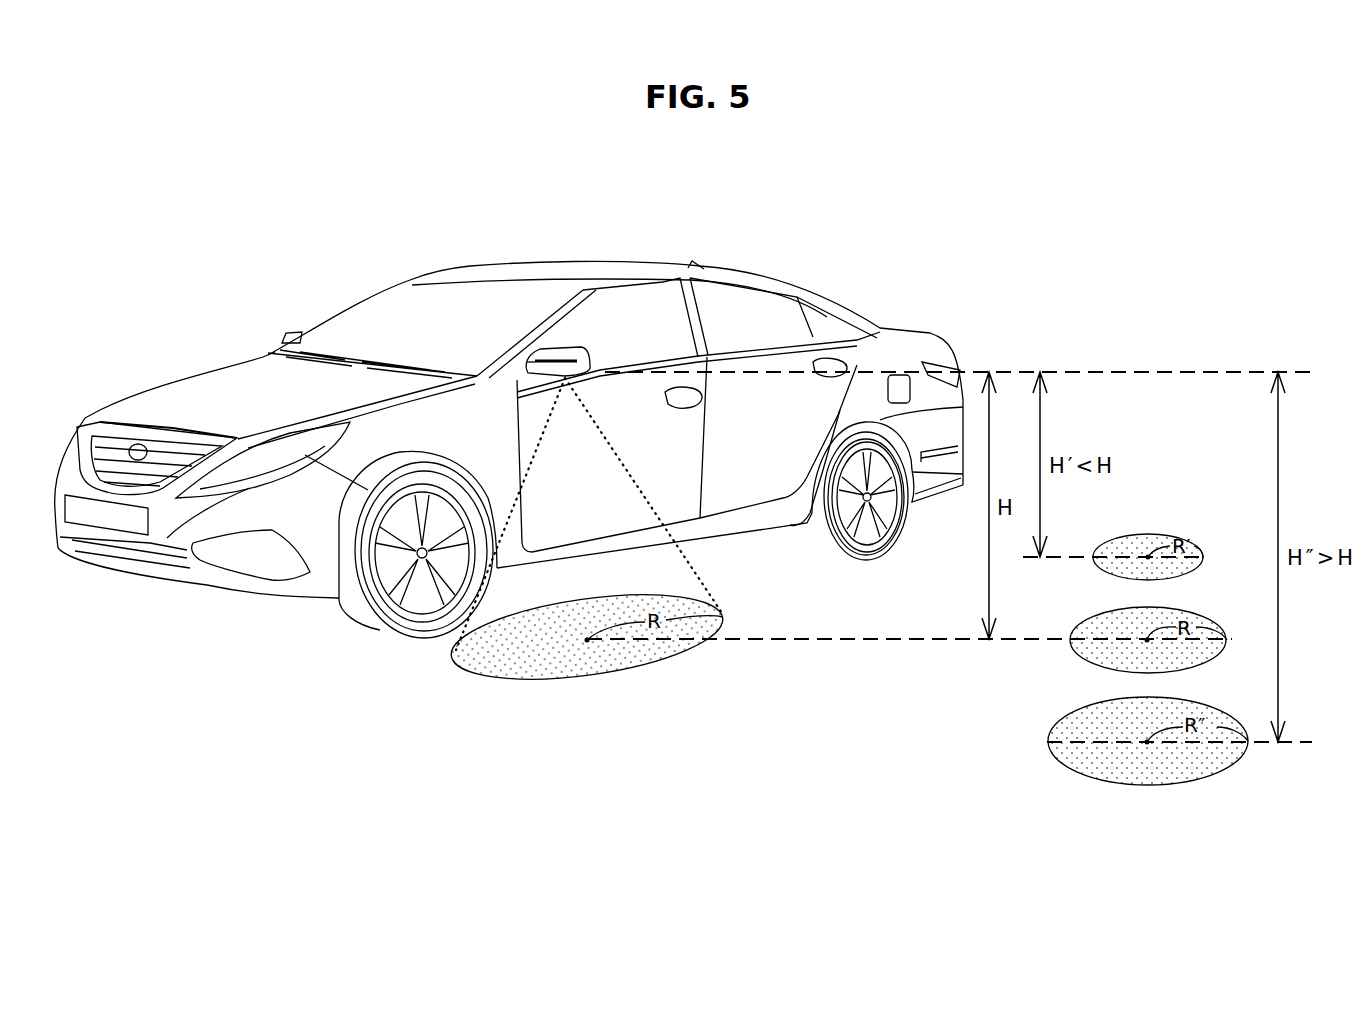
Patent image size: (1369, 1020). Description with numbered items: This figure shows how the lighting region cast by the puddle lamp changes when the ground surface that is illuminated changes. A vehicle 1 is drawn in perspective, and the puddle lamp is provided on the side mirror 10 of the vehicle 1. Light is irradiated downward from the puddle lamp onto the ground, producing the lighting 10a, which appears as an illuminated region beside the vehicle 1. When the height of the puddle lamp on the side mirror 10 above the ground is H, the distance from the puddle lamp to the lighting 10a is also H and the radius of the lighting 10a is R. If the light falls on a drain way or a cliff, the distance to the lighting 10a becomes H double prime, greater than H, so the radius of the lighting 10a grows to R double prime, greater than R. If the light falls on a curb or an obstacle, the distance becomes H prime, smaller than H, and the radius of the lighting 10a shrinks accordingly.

The vehicle 1 is at (442, 277).
The side mirror 10 is at (565, 350).
The lighting 10a is at (480, 663).